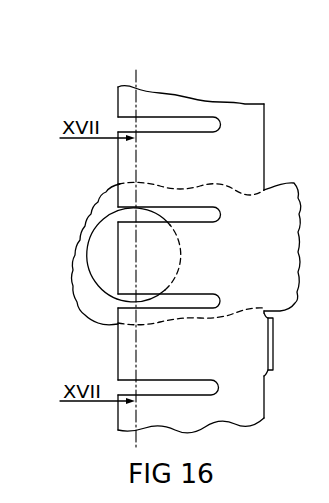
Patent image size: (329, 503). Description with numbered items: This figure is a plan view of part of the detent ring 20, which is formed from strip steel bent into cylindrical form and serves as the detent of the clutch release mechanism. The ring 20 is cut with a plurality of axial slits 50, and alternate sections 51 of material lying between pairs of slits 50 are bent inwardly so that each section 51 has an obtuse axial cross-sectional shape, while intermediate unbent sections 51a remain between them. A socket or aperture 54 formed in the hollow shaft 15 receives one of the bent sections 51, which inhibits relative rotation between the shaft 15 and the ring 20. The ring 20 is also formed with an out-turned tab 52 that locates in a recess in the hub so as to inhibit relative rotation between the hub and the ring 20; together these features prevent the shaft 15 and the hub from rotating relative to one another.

The detent ring 20 is at (238, 402).
The axial slits 50 is at (180, 126).
The sections 51 is at (131, 252).
The intermediate sections 51a is at (118, 164).
The socket or aperture 54 is at (112, 225).
The hollow shaft 15 is at (290, 200).
The out-turned tabs 52 is at (274, 342).